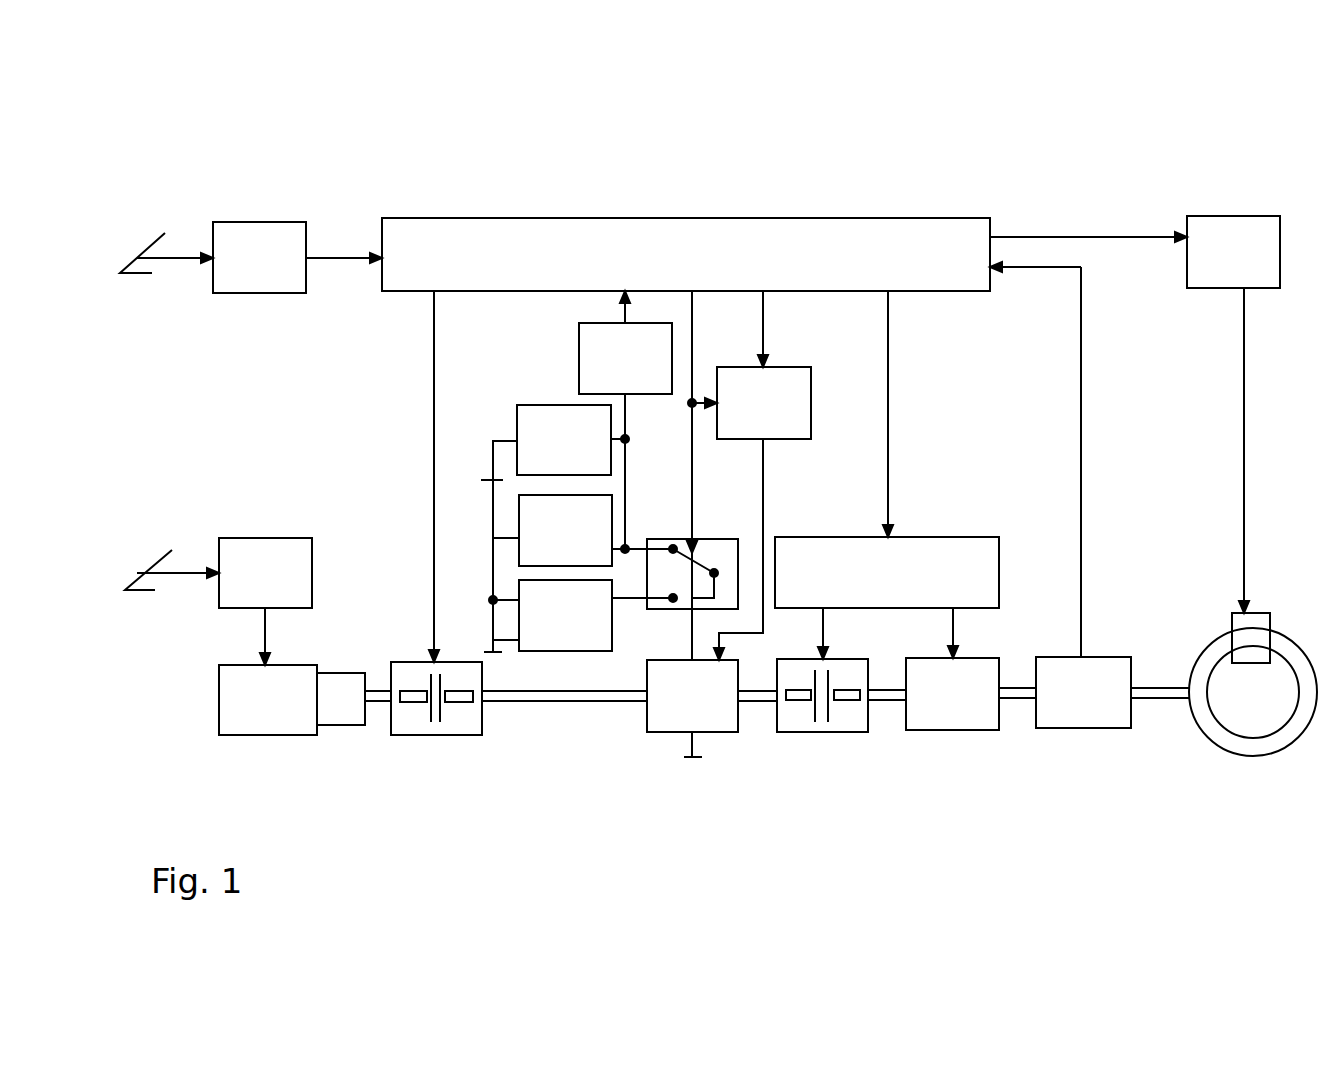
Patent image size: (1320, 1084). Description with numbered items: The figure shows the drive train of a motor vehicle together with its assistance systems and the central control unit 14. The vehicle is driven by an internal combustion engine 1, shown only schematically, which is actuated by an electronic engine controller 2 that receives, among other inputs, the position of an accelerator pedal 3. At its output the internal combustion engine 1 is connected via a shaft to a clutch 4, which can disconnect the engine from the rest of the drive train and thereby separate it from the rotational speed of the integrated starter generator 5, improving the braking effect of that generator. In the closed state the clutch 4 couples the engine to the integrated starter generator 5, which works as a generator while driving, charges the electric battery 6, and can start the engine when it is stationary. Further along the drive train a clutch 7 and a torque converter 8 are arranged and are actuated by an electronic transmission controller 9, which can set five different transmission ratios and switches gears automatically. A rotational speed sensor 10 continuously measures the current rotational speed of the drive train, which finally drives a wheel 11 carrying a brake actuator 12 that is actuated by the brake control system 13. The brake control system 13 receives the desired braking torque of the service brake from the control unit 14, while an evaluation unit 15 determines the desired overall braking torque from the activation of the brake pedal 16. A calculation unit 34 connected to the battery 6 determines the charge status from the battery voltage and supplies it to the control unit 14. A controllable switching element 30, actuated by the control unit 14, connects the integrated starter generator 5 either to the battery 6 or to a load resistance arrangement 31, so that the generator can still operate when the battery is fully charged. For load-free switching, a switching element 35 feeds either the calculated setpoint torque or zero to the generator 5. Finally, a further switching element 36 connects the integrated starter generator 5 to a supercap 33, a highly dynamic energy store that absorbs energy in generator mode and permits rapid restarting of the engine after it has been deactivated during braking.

The internal combustion engine 1 is at (255, 735).
The electronic engine controller 2 is at (312, 545).
The accelerator pedal 3 is at (132, 596).
The clutch 4 is at (415, 735).
The integrated starter generator 5 is at (710, 732).
The electric battery 6 is at (491, 555).
The clutch 7 is at (835, 732).
The torque converter 8 is at (960, 730).
The electronic transmission controller 9 is at (965, 537).
The rotational speed sensor 10 is at (1085, 728).
The wheel 11 is at (1230, 742).
The brake actuator 12 is at (1253, 638).
The brake control system 13 is at (1200, 216).
The control unit 14 is at (675, 218).
The evaluation unit 15 is at (290, 293).
The brake pedal 16 is at (138, 276).
The controllable switching element 30 is at (672, 610).
The load resistance arrangement 31 is at (492, 612).
The supercap 33 is at (480, 488).
The calculation unit 34 is at (579, 348).
The switching element 35 is at (811, 425).
The further switching element 36 is at (517, 410).